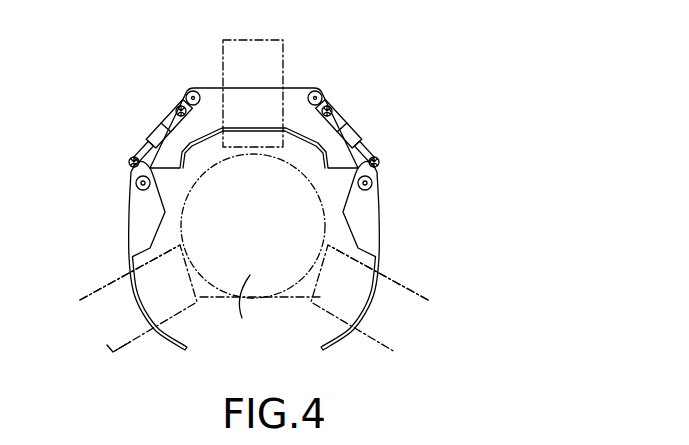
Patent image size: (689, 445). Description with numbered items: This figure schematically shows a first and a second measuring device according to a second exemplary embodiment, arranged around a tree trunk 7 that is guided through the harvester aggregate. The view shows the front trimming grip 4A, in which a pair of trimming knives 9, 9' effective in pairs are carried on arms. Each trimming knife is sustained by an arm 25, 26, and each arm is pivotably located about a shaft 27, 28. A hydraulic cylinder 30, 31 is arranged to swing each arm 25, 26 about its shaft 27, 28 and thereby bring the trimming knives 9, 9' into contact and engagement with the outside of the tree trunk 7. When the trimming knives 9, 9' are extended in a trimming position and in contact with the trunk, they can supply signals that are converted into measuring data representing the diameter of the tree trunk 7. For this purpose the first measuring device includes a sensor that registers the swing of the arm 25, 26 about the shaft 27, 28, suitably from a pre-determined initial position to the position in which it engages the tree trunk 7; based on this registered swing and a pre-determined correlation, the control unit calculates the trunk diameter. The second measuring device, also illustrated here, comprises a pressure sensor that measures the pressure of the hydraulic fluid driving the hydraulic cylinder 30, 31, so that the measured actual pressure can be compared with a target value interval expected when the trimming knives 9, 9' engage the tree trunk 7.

The front trimming grip 4A is at (445, 92).
The hydraulic cylinder 30 is at (163, 128).
The hydraulic cylinder 31 is at (345, 125).
The shaft 27 is at (130, 162).
The shaft 28 is at (380, 158).
The arm 25 is at (150, 212).
The arm 26 is at (366, 207).
The trimming knife 9 is at (123, 300).
The trimming knife 9' is at (396, 302).
The tree trunk 7 is at (246, 312).